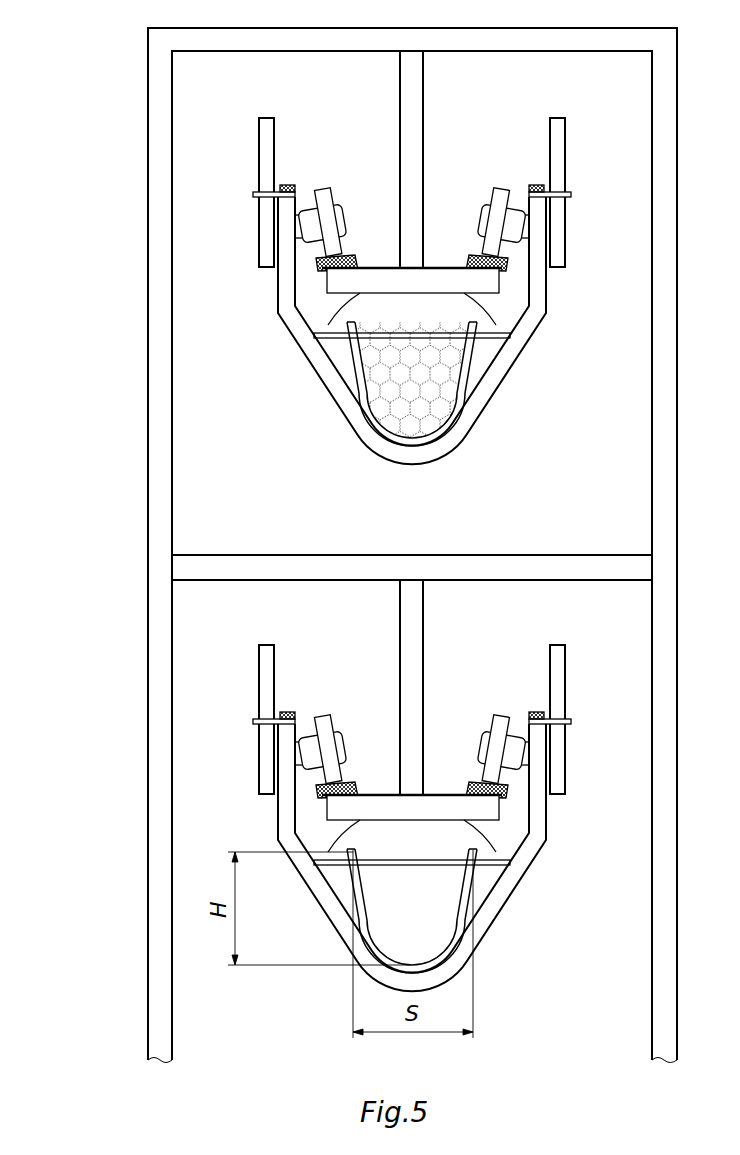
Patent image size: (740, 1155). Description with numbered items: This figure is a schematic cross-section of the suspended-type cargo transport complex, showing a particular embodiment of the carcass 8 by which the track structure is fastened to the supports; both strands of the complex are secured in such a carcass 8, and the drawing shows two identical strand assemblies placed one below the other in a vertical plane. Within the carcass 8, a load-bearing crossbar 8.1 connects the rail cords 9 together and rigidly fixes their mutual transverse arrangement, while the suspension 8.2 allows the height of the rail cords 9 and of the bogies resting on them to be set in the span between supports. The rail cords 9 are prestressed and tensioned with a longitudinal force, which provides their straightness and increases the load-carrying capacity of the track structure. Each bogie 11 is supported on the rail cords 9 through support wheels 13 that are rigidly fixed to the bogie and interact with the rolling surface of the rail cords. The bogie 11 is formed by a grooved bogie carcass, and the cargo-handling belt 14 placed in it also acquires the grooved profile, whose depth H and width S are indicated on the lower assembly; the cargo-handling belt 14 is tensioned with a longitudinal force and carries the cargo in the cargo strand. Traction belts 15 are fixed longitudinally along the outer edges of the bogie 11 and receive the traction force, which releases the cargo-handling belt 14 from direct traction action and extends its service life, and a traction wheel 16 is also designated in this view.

The carcass 8 is at (160, 275).
The load-bearing crossbar 8.1 is at (330, 287).
The suspension 8.2 is at (410, 133).
The rail cord 9 is at (320, 262).
The bogie 11 is at (327, 373).
The support wheel 13 is at (333, 253).
The cargo-handling belt 14 is at (358, 340).
The traction belt 15 is at (256, 193).
The traction wheel 16 is at (267, 160).